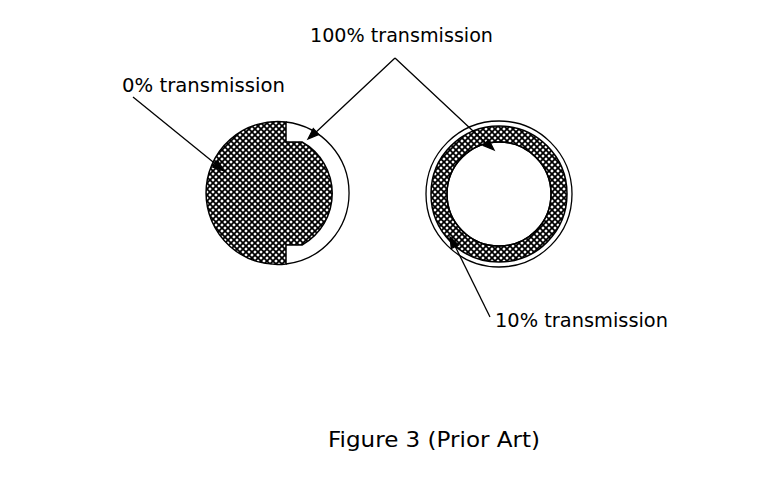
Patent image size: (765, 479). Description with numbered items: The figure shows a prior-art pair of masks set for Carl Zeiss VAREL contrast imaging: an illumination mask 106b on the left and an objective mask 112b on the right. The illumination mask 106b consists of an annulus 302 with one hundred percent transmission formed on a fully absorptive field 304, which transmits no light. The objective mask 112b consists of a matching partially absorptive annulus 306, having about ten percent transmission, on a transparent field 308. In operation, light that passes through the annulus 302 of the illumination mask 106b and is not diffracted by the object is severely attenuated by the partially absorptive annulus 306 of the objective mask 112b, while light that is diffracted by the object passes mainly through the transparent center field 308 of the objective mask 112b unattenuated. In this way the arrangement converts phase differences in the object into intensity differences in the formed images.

The illumination mask 106b is at (191, 223).
The objective mask 112b is at (573, 168).
The annulus 302 is at (337, 229).
The fully absorptive field 304 is at (260, 224).
The partially absorptive annulus 306 is at (519, 138).
The transparent field 308 is at (535, 192).